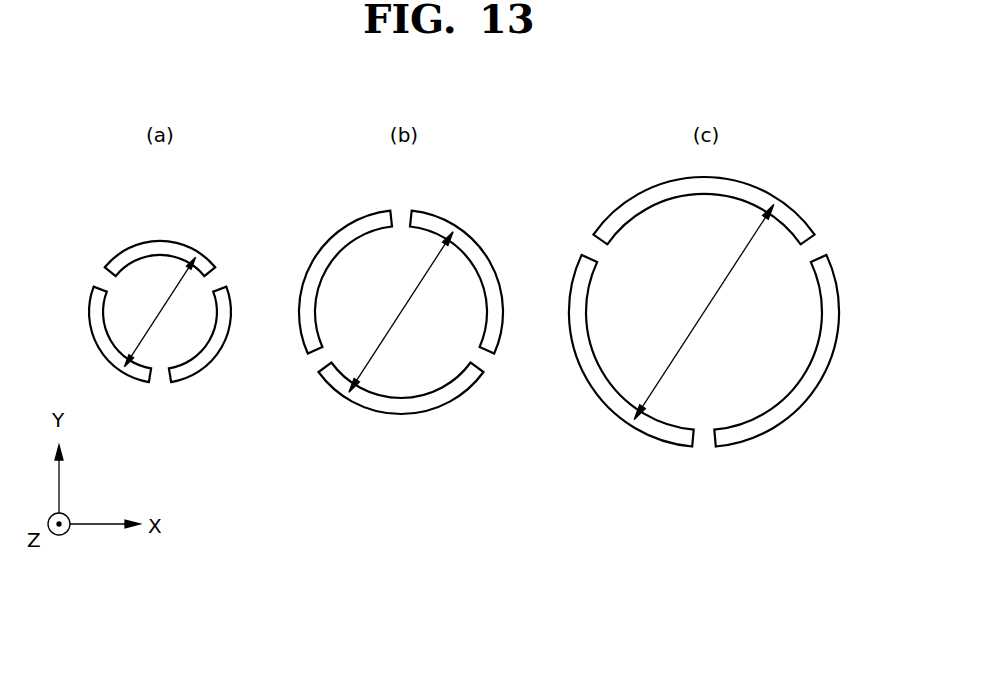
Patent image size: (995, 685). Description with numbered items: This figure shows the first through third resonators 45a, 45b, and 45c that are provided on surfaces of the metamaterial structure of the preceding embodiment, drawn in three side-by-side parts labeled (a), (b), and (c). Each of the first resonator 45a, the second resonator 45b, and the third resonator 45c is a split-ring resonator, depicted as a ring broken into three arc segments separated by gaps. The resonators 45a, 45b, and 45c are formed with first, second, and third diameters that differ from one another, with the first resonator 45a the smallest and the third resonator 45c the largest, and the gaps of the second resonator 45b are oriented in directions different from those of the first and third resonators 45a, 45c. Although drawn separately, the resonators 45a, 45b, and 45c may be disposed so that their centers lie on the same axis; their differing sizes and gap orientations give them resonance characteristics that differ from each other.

The first resonator 45a is at (190, 388).
The second resonator 45b is at (473, 403).
The third resonator 45c is at (792, 440).